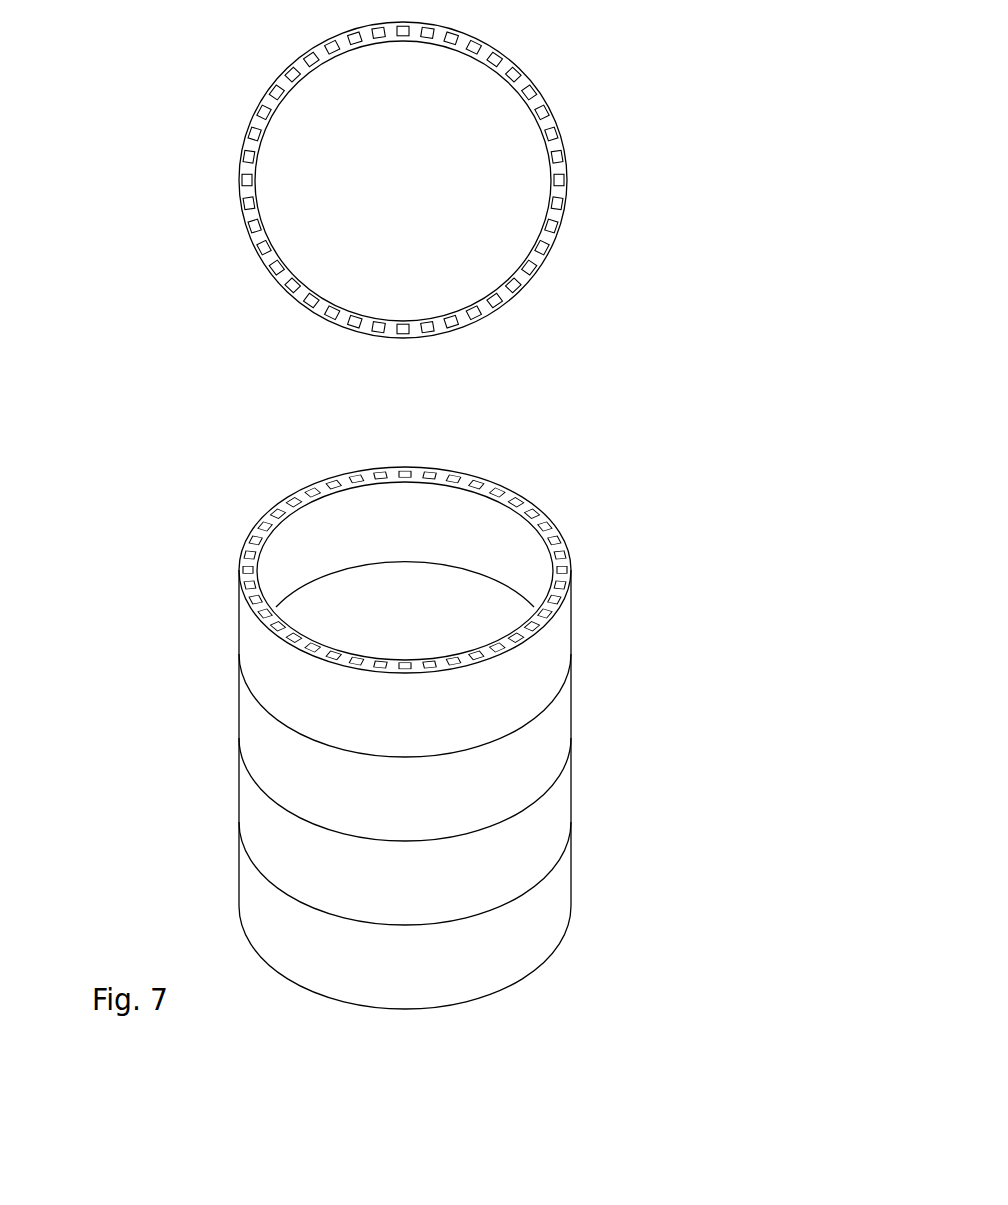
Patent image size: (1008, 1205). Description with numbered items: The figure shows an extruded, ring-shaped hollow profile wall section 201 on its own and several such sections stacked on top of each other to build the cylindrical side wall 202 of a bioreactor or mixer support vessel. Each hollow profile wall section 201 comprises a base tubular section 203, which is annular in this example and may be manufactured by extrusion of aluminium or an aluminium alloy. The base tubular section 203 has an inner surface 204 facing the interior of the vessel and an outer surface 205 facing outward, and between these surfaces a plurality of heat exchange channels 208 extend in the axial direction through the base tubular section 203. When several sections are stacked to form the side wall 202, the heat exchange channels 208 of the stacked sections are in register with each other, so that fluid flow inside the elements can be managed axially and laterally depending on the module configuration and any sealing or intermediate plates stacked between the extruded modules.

The hollow profile wall section 201 is at (169, 155).
The cylindrical side wall 202 is at (646, 774).
The base tubular section 203 is at (568, 193).
The inner surface 204 is at (551, 156).
The outer surface 205 is at (525, 81).
The heat exchange channels 208 is at (550, 230).